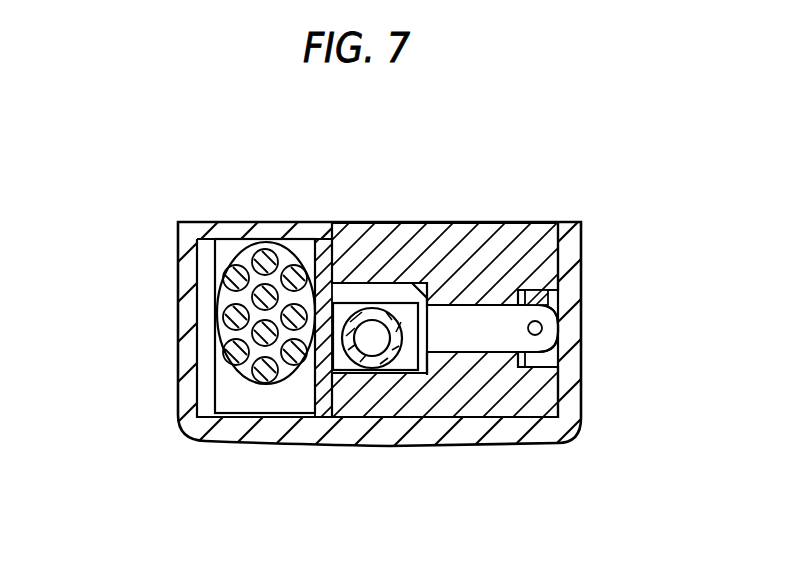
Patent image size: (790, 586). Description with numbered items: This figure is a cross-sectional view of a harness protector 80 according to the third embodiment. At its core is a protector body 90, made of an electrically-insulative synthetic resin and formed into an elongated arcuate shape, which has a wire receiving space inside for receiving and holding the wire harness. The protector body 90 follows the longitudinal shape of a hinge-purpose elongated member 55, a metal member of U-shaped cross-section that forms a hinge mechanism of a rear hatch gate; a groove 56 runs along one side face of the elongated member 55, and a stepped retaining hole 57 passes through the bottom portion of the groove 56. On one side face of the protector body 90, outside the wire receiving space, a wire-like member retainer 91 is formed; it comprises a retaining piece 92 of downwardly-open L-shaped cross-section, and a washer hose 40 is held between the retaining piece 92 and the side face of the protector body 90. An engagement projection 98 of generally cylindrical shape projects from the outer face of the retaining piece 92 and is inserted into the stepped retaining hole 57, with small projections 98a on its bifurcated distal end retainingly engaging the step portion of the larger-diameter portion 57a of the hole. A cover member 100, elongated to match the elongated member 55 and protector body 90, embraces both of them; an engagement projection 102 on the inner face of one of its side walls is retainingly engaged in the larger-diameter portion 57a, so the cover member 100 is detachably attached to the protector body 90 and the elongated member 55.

The harness protector 80 is at (306, 275).
The cover member 100 is at (175, 338).
The protector body 90 is at (196, 264).
The hinge-purpose elongated member 55 is at (416, 219).
The engagement projection 98 is at (500, 337).
The stepped retaining hole 57 is at (481, 313).
The larger-diameter portion 57a is at (518, 297).
The small projections 98a is at (542, 327).
The engagement projection 102 is at (556, 290).
The retaining piece 92 is at (428, 328).
The wire-like member retainer 91 is at (394, 280).
The washer hose 40 is at (355, 294).
The groove 56 is at (392, 368).